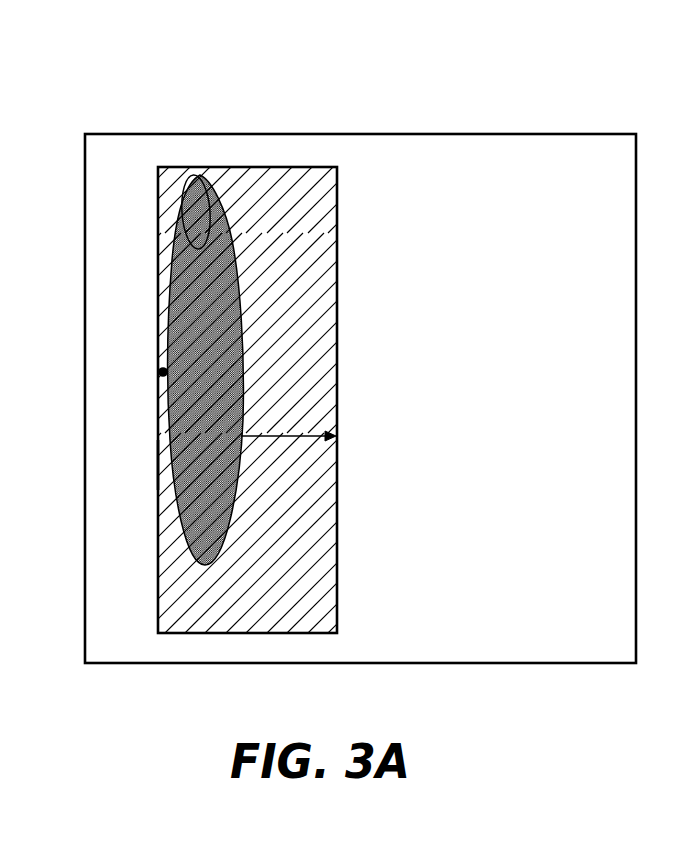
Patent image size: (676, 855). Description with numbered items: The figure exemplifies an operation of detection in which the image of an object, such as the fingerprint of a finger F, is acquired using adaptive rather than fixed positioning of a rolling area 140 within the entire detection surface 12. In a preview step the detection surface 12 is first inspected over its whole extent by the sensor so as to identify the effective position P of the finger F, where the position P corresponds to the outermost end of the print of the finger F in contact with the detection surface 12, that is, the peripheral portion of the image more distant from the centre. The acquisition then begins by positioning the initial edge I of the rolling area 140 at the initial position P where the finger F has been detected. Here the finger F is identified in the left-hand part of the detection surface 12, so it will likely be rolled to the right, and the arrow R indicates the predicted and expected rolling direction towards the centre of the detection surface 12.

The detection surface 12 is at (467, 157).
The rolling area 140 is at (297, 579).
The finger F is at (218, 273).
The arrow R is at (280, 436).
The position P is at (163, 372).
The initial edge I is at (157, 465).